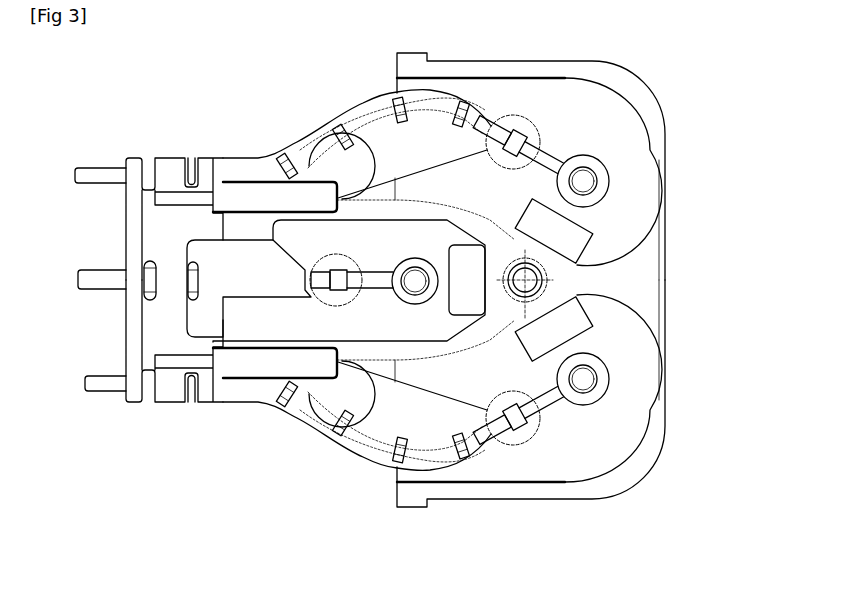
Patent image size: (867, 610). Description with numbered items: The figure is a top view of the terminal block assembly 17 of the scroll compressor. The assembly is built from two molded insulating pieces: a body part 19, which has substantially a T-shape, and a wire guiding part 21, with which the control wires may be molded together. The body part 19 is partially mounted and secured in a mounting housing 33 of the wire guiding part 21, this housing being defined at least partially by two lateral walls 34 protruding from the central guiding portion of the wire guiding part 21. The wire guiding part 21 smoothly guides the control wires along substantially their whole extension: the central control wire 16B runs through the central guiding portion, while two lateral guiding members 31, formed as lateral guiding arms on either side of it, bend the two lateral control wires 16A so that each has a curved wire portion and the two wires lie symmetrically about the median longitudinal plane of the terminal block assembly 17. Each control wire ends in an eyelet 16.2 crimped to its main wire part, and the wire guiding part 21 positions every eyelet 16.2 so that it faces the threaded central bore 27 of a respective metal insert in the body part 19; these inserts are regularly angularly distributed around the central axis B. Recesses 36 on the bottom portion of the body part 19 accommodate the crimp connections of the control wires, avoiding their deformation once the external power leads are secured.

The terminal block assembly 17 is at (387, 290).
The lateral control wire 16A is at (102, 177).
The central control wire 16B is at (102, 283).
The wire guiding part 21 is at (143, 237).
The lateral wall 34 is at (295, 192).
The mounting housing 33 is at (370, 140).
The lateral guiding member 31 is at (390, 107).
The recess 36 is at (513, 130).
The central bore 27 is at (585, 172).
The eyelet 16.2 is at (607, 173).
The body part 19 is at (657, 208).
The central axis B is at (596, 286).